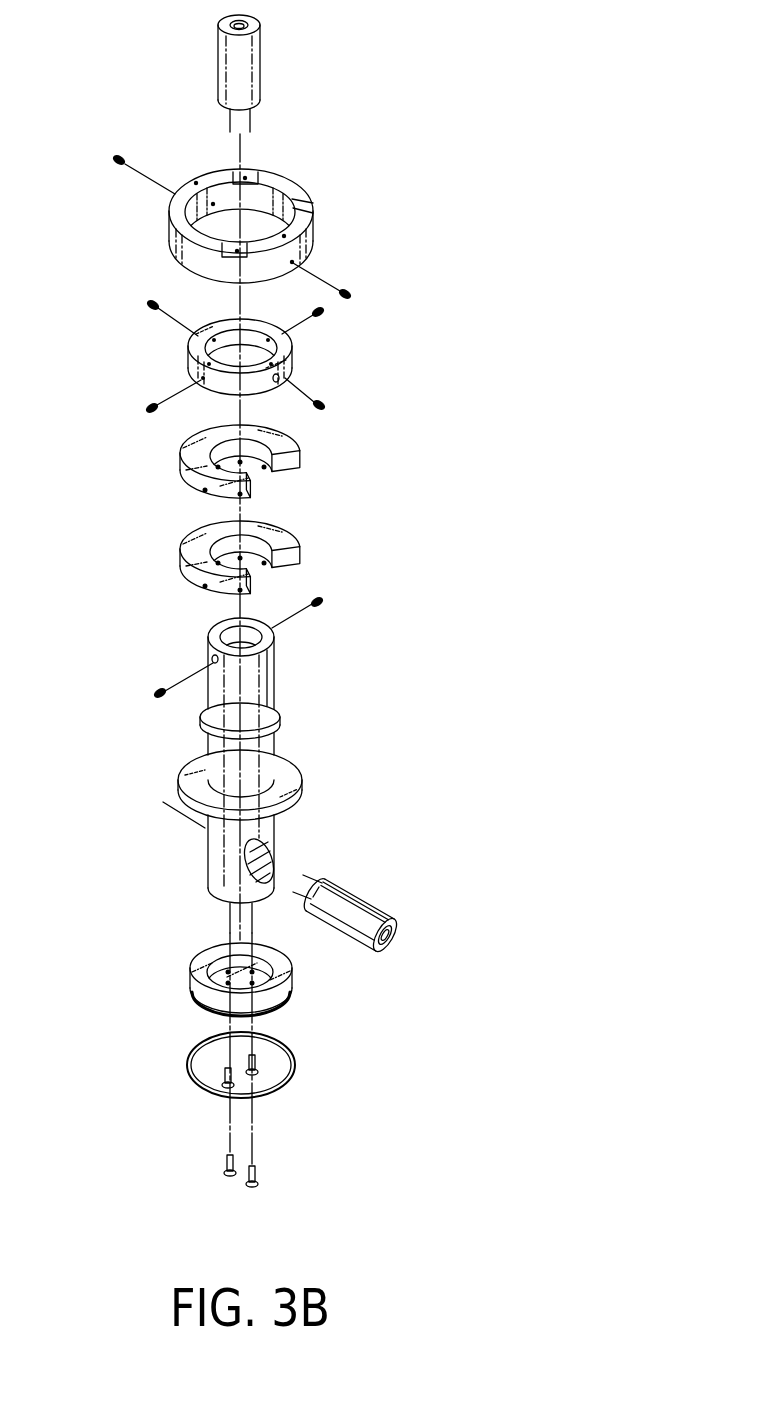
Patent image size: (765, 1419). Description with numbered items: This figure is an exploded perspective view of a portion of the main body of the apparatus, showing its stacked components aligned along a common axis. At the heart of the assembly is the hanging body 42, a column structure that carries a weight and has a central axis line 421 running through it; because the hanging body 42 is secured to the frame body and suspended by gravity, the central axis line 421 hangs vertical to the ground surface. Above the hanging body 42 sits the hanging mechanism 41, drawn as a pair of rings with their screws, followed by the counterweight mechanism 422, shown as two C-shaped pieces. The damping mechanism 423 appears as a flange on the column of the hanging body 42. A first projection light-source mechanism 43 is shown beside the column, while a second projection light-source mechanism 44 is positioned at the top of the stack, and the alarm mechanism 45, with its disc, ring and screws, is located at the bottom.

The hanging mechanism 41 is at (104, 163).
The hanging body 42 is at (240, 737).
The central axis line 421 is at (240, 611).
The counterweight mechanism 422 is at (104, 431).
The damping mechanism 423 is at (288, 773).
The first projection light-source mechanism 43 is at (348, 902).
The second projection light-source mechanism 44 is at (257, 68).
The alarm mechanism 45 is at (167, 933).